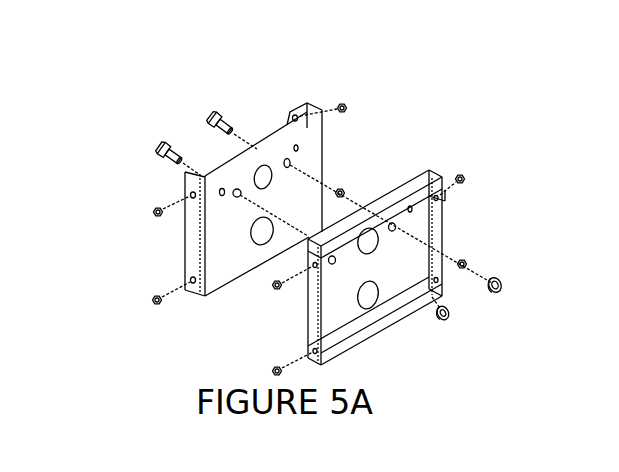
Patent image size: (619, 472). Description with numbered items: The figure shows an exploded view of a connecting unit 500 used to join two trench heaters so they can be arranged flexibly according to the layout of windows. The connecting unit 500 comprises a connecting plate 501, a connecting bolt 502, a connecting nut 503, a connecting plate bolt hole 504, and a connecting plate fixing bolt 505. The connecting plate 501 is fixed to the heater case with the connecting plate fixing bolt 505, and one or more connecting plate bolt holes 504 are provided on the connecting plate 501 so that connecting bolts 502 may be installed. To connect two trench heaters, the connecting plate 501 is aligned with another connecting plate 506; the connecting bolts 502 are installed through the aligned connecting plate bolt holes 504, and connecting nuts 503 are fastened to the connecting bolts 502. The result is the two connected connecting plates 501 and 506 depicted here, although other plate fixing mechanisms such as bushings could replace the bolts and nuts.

The connecting unit 500 is at (418, 238).
The connecting plate 501 is at (323, 143).
The connecting bolt 502 is at (209, 127).
The connecting nut 503 is at (501, 282).
The connecting plate bolt hole 504 is at (288, 158).
The connecting plate fixing bolt 505 is at (150, 300).
The another connecting plate 506 is at (430, 172).